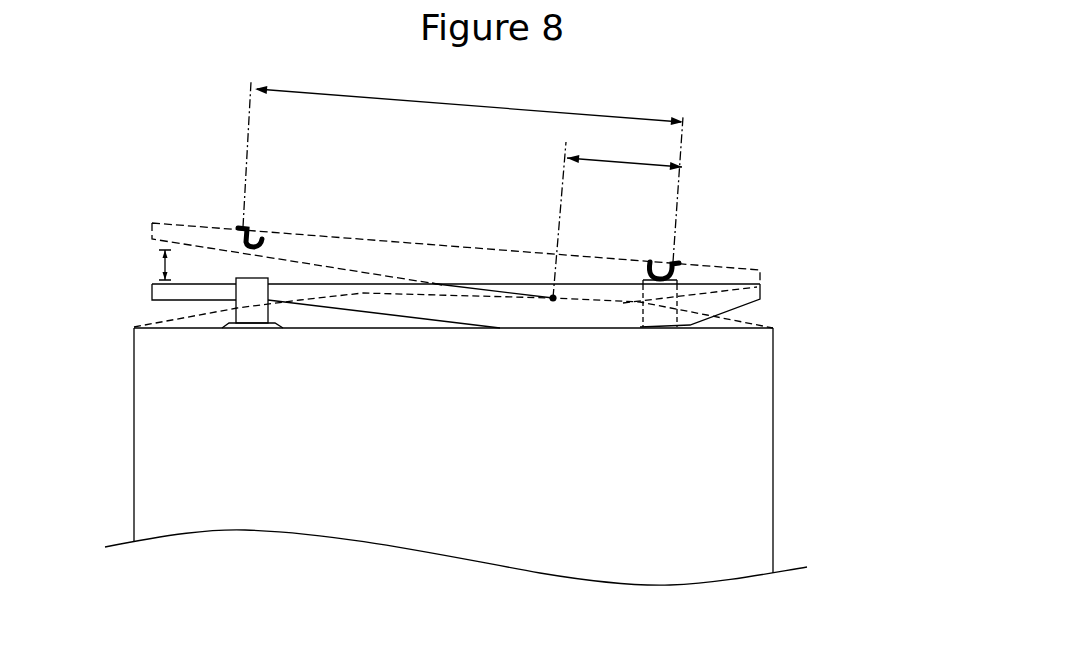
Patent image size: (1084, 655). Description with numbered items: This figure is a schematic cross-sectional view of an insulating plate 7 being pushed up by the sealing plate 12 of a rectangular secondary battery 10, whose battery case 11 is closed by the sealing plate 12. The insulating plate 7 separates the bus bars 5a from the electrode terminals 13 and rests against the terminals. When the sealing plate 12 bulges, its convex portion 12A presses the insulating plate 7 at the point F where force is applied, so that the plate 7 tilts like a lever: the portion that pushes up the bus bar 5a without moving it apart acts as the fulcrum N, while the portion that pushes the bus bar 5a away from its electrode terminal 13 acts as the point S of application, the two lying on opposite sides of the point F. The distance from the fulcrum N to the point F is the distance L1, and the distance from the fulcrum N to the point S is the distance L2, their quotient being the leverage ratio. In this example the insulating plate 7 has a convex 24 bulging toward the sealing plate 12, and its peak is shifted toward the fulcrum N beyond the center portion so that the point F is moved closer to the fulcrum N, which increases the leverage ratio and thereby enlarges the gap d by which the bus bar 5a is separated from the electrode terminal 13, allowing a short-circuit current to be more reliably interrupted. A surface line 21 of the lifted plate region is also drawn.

The rectangular secondary battery 10 is at (805, 381).
The battery case 11 is at (471, 506).
The sealing plate 12 is at (363, 300).
The convex portion 12A is at (435, 280).
The electrode terminal 13 is at (257, 277).
The bus bar 5a is at (255, 240).
The insulating plate 7 is at (338, 283).
The plate lower surface 21 is at (425, 308).
The convex 24 is at (530, 315).
The point of application S is at (240, 227).
The fulcrum N is at (675, 262).
The point where force is applied F is at (553, 300).
The distance from fulcrum to point where force is applied L1 is at (624, 151).
The distance from fulcrum to point of application L2 is at (469, 100).
The gap d is at (157, 264).